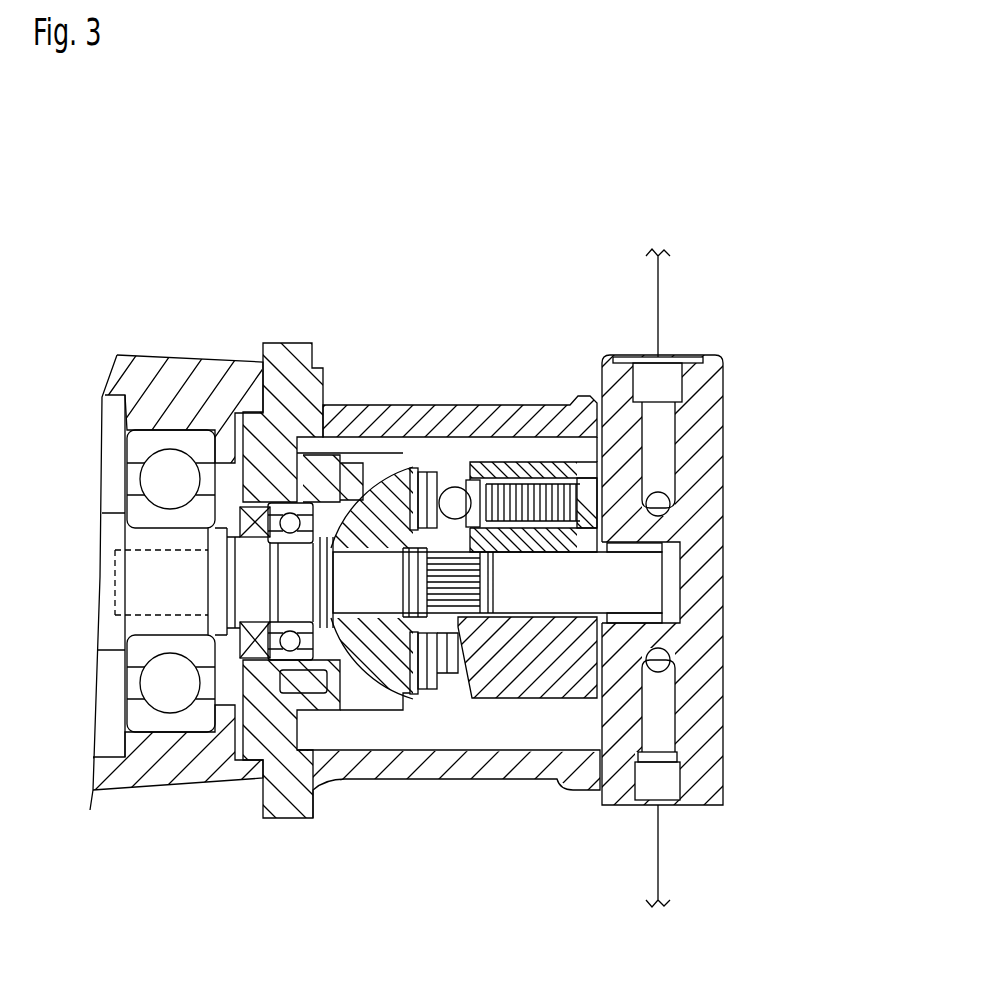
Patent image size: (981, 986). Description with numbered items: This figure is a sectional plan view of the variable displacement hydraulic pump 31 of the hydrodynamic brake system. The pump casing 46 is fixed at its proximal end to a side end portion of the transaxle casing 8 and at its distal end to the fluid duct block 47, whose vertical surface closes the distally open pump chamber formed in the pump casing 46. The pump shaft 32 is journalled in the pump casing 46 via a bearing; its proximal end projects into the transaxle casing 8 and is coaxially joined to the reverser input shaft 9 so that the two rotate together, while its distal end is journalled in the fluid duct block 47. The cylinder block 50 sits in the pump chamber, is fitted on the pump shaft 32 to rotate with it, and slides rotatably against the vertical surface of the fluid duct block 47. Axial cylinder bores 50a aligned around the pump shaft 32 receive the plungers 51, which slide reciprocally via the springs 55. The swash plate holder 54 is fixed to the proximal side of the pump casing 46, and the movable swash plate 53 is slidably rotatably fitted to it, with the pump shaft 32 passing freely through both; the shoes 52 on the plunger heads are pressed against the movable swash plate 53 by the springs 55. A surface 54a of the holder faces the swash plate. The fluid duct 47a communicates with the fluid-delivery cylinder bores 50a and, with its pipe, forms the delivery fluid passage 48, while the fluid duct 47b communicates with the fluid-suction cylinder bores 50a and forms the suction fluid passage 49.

The variable displacement hydraulic pump 31 is at (498, 492).
The transaxle casing 8 is at (194, 358).
The reverser input shaft 9 is at (103, 545).
The pump shaft 32 is at (557, 582).
The pump casing 46 is at (360, 404).
The fluid duct block 47 is at (724, 799).
The fluid duct 47a is at (710, 459).
The fluid duct 47b is at (710, 700).
The delivery fluid passage 48 is at (660, 310).
The suction fluid passage 49 is at (660, 861).
The cylinder block 50 is at (558, 462).
The cylinder bores 50a is at (547, 462).
The plungers 51 is at (464, 470).
The shoes 52 is at (434, 466).
The movable swash plate 53 is at (412, 466).
The swash plate holder 54 is at (324, 368).
The inner wall 54a is at (393, 455).
The spring 55 is at (568, 462).